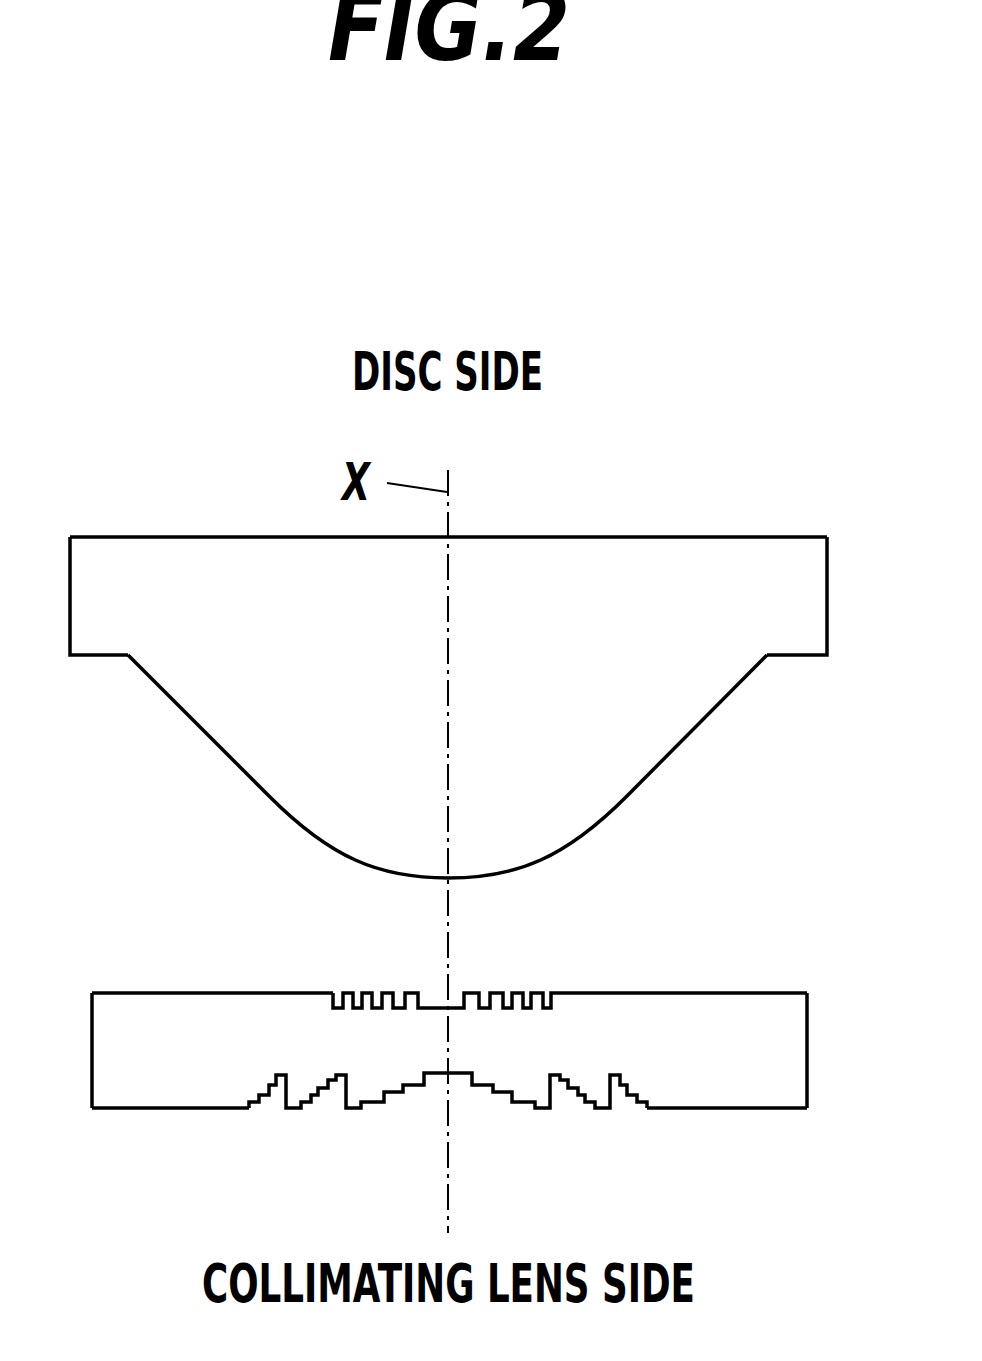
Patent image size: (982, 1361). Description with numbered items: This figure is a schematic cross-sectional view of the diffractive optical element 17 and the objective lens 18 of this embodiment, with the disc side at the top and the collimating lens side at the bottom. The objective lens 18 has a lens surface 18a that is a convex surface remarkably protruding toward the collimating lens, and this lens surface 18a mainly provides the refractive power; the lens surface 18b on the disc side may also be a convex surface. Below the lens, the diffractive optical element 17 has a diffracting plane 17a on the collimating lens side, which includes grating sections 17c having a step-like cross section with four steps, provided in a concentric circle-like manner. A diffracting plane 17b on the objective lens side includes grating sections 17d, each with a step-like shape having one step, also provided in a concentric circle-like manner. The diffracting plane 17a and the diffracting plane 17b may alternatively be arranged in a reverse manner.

The diffractive optical element 17 is at (449, 1049).
The diffracting plane 17a is at (175, 1112).
The diffracting plane 17b is at (173, 990).
The grating section 17c is at (497, 1094).
The grating section 17d is at (498, 990).
The objective lens 18 is at (448, 626).
The lens surface 18a is at (615, 803).
The lens surface 18b is at (568, 535).